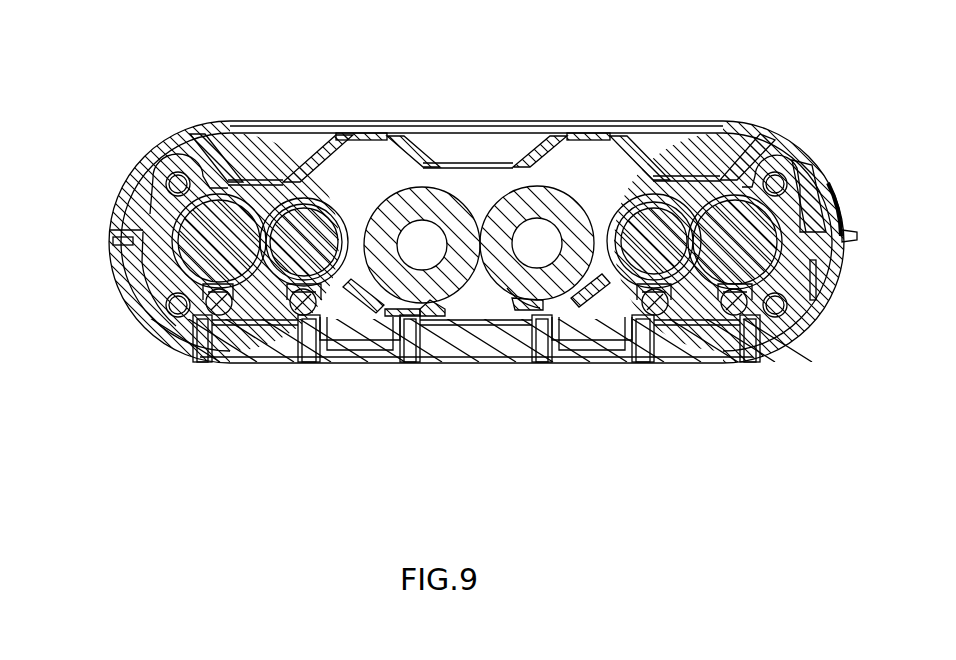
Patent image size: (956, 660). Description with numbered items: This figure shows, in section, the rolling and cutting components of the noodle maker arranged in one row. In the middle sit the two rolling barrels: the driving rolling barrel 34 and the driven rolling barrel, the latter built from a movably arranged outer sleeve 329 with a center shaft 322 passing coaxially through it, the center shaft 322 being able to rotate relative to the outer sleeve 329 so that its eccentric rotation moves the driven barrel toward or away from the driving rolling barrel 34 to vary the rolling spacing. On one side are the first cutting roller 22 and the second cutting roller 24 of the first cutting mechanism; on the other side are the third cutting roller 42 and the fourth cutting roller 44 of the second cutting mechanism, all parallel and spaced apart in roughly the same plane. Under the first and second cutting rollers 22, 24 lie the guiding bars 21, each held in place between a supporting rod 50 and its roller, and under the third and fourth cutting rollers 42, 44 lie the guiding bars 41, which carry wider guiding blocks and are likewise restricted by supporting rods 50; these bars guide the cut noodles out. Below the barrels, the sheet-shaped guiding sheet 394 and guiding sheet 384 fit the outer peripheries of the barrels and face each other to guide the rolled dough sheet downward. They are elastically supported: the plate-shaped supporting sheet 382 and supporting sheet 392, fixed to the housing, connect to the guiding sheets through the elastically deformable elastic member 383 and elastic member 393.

The driving rolling barrel 34 is at (533, 207).
The outer sleeve 329 is at (413, 240).
The center shaft 322 is at (335, 152).
The first cutting roller 22 is at (212, 222).
The second cutting roller 24 is at (300, 238).
The guiding bar 21 is at (222, 288).
The supporting rod 50 is at (218, 306).
The supporting sheet 382 is at (378, 308).
The elastic member 383 is at (418, 311).
The guiding sheet 384 is at (440, 313).
The third cutting roller 42 is at (655, 228).
The fourth cutting roller 44 is at (733, 228).
The guiding bar 41 is at (655, 284).
The supporting sheet 392 is at (592, 288).
The elastic member 393 is at (545, 308).
The guiding sheet 394 is at (520, 314).